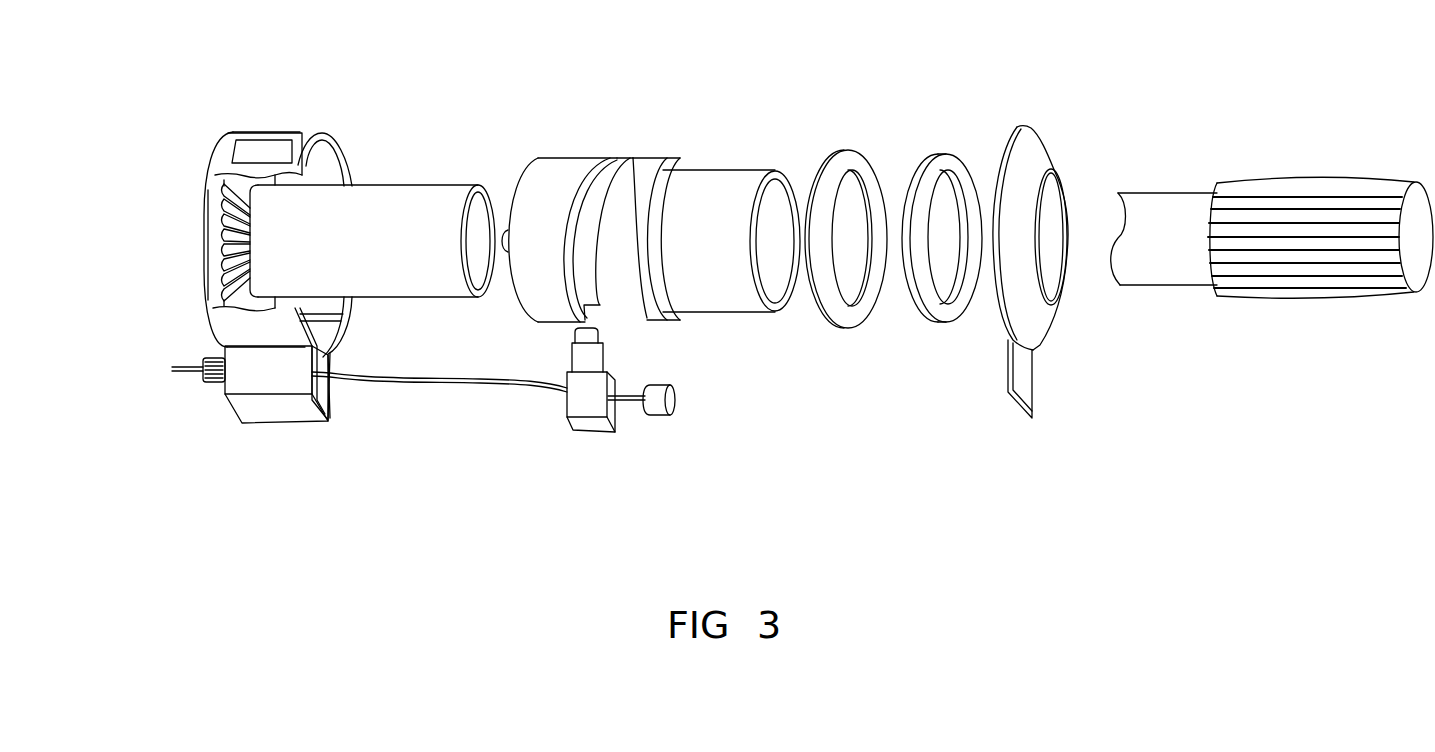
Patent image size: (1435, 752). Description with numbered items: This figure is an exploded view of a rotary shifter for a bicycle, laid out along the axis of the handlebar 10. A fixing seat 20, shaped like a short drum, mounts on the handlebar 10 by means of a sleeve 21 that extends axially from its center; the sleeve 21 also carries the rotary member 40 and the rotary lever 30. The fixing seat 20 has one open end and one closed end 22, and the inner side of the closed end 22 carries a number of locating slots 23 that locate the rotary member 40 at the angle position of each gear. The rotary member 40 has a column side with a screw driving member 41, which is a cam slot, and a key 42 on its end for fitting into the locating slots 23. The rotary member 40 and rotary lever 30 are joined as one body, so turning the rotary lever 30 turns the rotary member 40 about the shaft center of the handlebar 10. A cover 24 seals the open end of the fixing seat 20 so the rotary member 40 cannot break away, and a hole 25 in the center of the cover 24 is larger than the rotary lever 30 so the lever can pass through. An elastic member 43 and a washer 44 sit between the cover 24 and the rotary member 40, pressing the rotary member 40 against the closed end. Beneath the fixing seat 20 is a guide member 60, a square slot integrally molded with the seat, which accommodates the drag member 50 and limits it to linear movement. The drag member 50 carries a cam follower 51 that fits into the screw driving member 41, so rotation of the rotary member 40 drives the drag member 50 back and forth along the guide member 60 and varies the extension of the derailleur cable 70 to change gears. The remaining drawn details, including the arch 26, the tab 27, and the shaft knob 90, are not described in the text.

The handlebar 10 is at (1320, 295).
The fixing seat 20 is at (318, 132).
The sleeve 21 is at (405, 186).
The closed end 22 is at (213, 277).
The locating slots 23 is at (217, 242).
The cover 24 is at (1037, 140).
The hole 25 is at (1053, 213).
The ring arch 26 is at (347, 172).
The tab 27 is at (260, 148).
The rotary lever 30 is at (715, 170).
The rotary member 40 is at (673, 160).
The screw driving member 41 is at (608, 193).
The key 42 is at (505, 232).
The elastic member 43 is at (925, 168).
The washer 44 is at (840, 162).
The drag member 50 is at (590, 423).
The cam follower 51 is at (590, 335).
The guide member 60 is at (283, 405).
The derailleur cable 70 is at (448, 387).
The shaft knob 90 is at (205, 380).